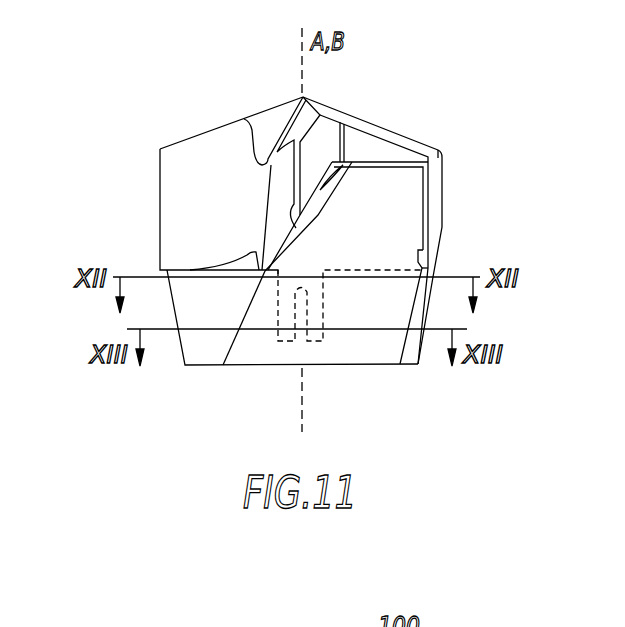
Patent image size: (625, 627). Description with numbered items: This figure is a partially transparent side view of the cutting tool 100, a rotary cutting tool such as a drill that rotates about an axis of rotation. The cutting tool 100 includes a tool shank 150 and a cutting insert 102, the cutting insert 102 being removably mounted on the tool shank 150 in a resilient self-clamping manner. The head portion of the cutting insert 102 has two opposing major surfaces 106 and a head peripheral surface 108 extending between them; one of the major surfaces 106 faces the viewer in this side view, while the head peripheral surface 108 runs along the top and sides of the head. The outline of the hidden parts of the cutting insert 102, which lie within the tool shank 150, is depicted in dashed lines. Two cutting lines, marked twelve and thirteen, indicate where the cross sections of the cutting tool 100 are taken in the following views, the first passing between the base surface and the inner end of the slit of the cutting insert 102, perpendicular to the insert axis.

The cutting tool 100 is at (160, 62).
The cutting insert 102 is at (381, 118).
The major surfaces 106 is at (184, 182).
The head peripheral surface 108 is at (218, 120).
The tool shank 150 is at (160, 362).